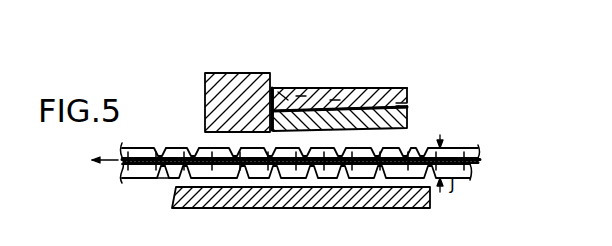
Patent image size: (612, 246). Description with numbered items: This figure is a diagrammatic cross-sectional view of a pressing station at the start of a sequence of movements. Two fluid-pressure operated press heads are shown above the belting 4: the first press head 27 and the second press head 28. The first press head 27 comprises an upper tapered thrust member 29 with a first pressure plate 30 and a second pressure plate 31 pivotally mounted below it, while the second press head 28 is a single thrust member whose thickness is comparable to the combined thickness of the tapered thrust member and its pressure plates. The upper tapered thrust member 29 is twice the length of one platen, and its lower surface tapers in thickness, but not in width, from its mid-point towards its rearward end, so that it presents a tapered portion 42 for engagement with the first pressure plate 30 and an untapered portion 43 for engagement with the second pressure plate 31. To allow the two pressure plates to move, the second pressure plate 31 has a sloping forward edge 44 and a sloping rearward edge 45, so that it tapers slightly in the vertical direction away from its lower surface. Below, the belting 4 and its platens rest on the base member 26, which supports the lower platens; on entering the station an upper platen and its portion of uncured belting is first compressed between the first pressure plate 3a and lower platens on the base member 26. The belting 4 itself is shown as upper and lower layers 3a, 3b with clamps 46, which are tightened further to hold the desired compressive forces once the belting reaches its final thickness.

The second press head 28 is at (212, 110).
The sloping forward edge 44 is at (273, 112).
The untapered portion 43 is at (283, 97).
The second pressure plate 31 is at (301, 96).
The sloping rearward edge 45 is at (335, 100).
The first press head 27 is at (348, 98).
The upper tapered thrust member 29 is at (346, 90).
The tapered portion 42 is at (400, 104).
The first pressure plate 30 is at (408, 112).
The belting 4 is at (318, 170).
The first pressure plate 3a is at (478, 151).
The lower tape layer 3b is at (472, 177).
The clamps 46 is at (164, 180).
The base member 26 is at (365, 207).